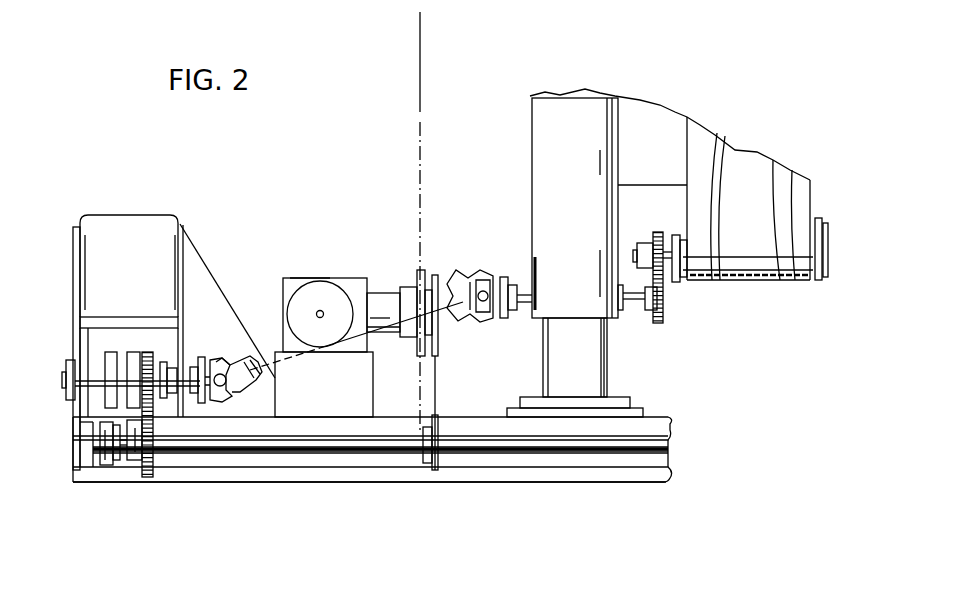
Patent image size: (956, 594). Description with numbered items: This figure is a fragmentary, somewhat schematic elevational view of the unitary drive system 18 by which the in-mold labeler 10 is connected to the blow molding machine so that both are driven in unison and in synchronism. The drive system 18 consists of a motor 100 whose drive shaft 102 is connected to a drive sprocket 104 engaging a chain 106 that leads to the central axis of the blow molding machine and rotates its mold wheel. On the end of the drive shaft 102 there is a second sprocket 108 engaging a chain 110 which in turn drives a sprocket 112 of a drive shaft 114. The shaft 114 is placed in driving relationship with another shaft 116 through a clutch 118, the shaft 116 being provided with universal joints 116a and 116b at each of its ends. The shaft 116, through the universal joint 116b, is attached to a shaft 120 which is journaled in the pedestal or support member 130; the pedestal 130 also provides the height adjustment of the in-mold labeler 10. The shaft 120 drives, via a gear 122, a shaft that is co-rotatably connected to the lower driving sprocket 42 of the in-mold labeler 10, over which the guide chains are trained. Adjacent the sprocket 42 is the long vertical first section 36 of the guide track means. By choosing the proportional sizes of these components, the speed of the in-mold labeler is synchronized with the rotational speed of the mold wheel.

The in-mold labeler 10 is at (665, 102).
The drive system 18 is at (311, 278).
The first section of guide track means 36 is at (762, 274).
The lower driving sprocket 42 is at (822, 282).
The motor 100 is at (355, 282).
The drive shaft 102 is at (378, 296).
The drive sprocket 104 is at (407, 287).
The chain 106 is at (421, 164).
The second sprocket 108 is at (438, 275).
The chain 110 is at (437, 382).
The sprocket 112 is at (438, 432).
The drive shaft 114 is at (400, 453).
The shaft 116 is at (250, 360).
The universal joint 116a is at (216, 360).
The universal joint 116b is at (492, 284).
The clutch 118 is at (73, 322).
The shaft 120 is at (637, 300).
The gear 122 is at (663, 284).
The pedestal 130 is at (608, 374).